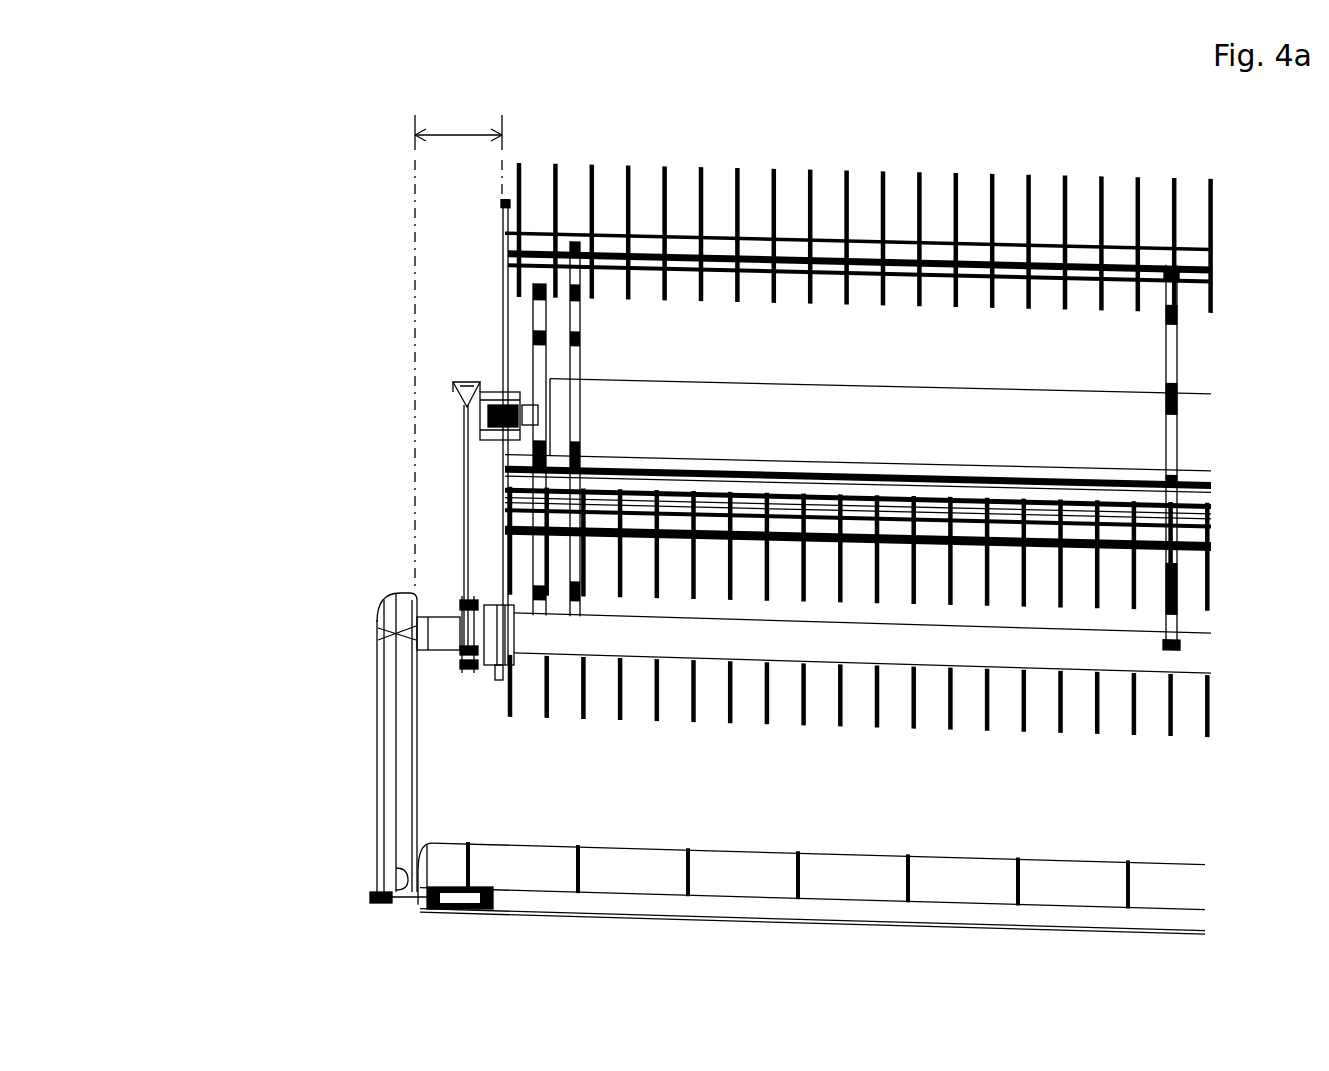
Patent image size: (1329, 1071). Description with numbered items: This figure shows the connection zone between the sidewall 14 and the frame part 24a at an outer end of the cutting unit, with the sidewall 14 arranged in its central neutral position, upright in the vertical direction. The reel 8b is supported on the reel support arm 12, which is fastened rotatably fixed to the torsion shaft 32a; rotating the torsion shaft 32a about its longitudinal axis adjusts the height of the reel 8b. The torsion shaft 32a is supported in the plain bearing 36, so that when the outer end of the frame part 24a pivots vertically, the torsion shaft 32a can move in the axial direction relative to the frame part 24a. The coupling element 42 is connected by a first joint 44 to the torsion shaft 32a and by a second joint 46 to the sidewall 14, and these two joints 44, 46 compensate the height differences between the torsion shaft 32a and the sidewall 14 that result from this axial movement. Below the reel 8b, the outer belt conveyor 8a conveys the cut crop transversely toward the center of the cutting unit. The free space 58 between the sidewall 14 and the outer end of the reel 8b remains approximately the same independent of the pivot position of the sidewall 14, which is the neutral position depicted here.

The free space 58 is at (460, 135).
The frame part 24a is at (272, 246).
The reel 8b is at (505, 285).
The reel support arm 12 is at (466, 510).
The coupling element 42 is at (440, 632).
The second joint 46 is at (418, 600).
The first joint 44 is at (395, 632).
The sidewall 14 is at (388, 720).
The plain bearing 36 is at (507, 652).
The torsion shaft 32a is at (777, 647).
The belt conveyor 8a is at (768, 885).